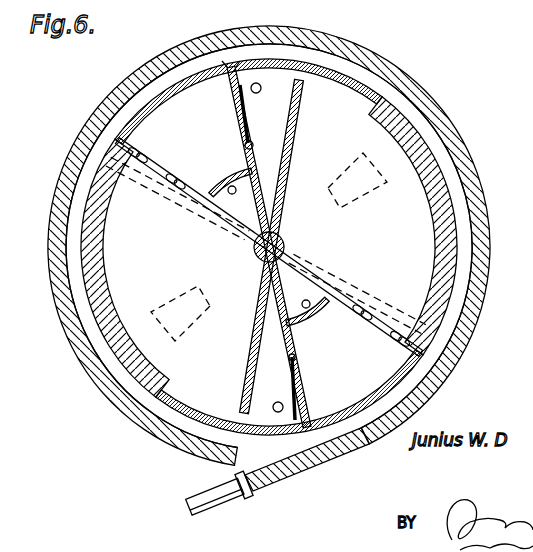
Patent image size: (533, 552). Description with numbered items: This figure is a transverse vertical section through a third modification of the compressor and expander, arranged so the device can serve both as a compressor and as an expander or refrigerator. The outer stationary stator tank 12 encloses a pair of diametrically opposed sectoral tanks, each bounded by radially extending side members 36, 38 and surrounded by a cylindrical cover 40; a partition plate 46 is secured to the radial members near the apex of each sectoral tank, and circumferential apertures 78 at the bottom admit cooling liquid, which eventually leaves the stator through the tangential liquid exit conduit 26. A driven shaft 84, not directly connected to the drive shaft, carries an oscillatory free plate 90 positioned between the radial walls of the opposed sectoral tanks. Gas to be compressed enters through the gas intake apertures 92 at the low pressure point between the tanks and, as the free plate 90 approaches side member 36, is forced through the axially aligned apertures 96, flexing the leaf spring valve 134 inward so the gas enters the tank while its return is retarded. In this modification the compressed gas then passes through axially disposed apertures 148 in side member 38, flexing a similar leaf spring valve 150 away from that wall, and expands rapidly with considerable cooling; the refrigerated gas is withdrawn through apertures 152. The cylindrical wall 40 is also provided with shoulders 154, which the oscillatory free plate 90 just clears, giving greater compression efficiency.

The stator tank 12 is at (446, 112).
The liquid exit conduit 26 is at (228, 498).
The radially extending side member 36 is at (178, 190).
The radially extending side member 38 is at (232, 64).
The cylindrical cover 40 is at (168, 410).
The partition plate 46 is at (212, 188).
The circumferential apertures 78 is at (254, 186).
The driven shaft 84 is at (285, 244).
The oscillatory free plate 90 is at (299, 112).
The gas intake apertures 92 is at (372, 187).
The axially aligned apertures 96 is at (143, 168).
The leaf spring valve 134 is at (148, 147).
The axially disposed apertures 148 is at (244, 103).
The leaf spring valve 150 is at (256, 130).
The apertures 152 is at (259, 85).
The shoulders 154 is at (447, 188).